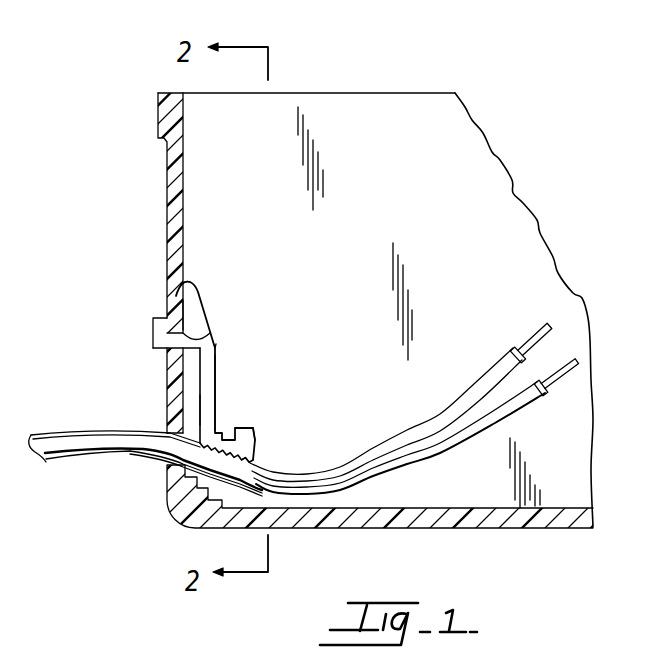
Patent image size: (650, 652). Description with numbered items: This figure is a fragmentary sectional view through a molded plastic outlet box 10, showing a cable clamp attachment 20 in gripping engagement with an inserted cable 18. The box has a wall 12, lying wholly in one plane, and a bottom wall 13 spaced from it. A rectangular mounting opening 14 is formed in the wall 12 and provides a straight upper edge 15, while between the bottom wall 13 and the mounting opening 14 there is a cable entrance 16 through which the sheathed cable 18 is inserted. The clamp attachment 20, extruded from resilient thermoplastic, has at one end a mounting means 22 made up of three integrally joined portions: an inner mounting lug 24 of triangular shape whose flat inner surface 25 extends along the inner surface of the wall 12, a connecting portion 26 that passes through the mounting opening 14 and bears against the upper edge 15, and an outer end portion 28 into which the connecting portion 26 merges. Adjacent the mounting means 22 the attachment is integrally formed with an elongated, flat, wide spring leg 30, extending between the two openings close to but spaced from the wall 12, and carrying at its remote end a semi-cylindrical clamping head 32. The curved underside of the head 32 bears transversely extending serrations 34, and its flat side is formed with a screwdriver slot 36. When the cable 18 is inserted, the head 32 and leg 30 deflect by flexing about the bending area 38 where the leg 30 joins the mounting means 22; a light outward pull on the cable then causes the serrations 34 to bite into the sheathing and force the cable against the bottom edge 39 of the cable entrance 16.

The outlet box 10 is at (155, 179).
The wall 12 is at (167, 240).
The bottom wall 13 is at (500, 529).
The mounting opening 14 is at (167, 378).
The upper edge 15 is at (212, 333).
The cable entrance 16 is at (168, 432).
The cable 18 is at (80, 462).
The cable clamp attachment 20 is at (222, 368).
The mounting means 22 is at (208, 301).
The inner mounting lug 24 is at (177, 318).
The flat inner surface 25 is at (170, 297).
The connecting portion 26 is at (152, 349).
The outer end portion 28 is at (152, 320).
The spring leg 30 is at (216, 405).
The clamping head 32 is at (255, 430).
The serrations 34 is at (253, 446).
The screwdriver slot 36 is at (240, 411).
The bending area 38 is at (217, 345).
The bottom edge 39 is at (145, 462).